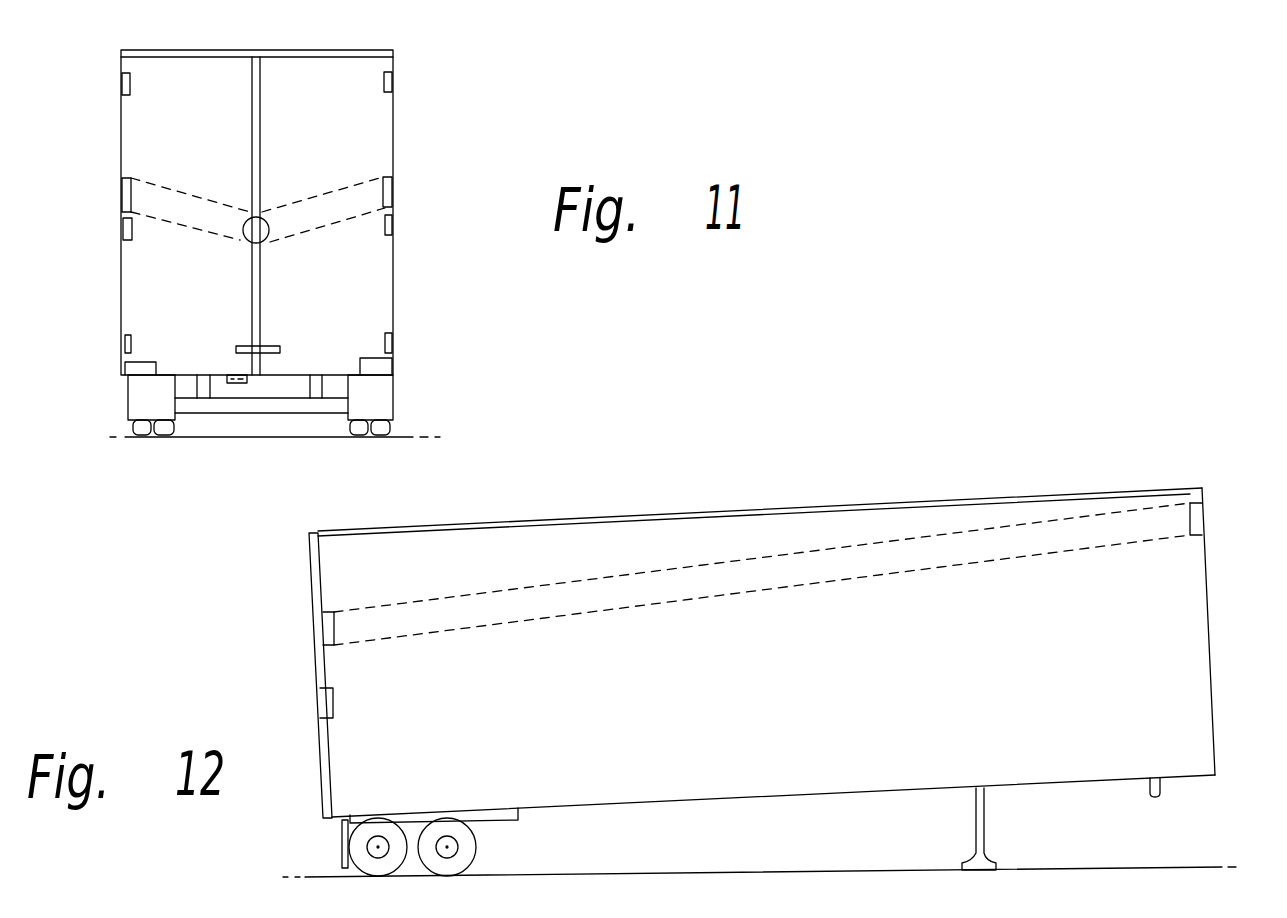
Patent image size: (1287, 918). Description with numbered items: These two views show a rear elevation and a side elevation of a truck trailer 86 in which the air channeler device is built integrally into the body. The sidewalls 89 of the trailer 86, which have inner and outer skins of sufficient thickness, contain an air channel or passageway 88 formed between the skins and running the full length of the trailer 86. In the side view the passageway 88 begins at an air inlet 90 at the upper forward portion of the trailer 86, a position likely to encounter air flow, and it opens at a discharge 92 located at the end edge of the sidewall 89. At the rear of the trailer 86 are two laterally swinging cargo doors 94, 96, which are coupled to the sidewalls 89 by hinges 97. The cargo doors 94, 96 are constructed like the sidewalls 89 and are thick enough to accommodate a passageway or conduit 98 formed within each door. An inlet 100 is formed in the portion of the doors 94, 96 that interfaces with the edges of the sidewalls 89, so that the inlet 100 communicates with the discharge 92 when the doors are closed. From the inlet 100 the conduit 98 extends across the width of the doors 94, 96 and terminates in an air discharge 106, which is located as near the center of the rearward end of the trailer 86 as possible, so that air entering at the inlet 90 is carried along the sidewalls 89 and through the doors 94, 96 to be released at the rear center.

In FIG. 11, the trailer 86 is at (395, 118).
In FIG. 12, the trailer 86 is at (866, 503).
In FIG. 12, the air channel or passageway 88 is at (995, 535).
In FIG. 11, the sidewalls 89 is at (395, 280).
In FIG. 12, the sidewalls 89 is at (855, 665).
In FIG. 12, the air inlet 90 is at (1204, 518).
In FIG. 12, the discharge 92 is at (336, 615).
In FIG. 11, the cargo door 94 is at (200, 140).
In FIG. 11, the cargo door 96 is at (335, 143).
In FIG. 12, the cargo door 96 is at (308, 580).
In FIG. 11, the hinges 97 is at (397, 343).
In FIG. 12, the hinges 97 is at (336, 702).
In FIG. 11, the passageway or conduit 98 is at (342, 197).
In FIG. 11, the inlet 100 is at (393, 193).
In FIG. 11, the air discharge 106 is at (270, 217).